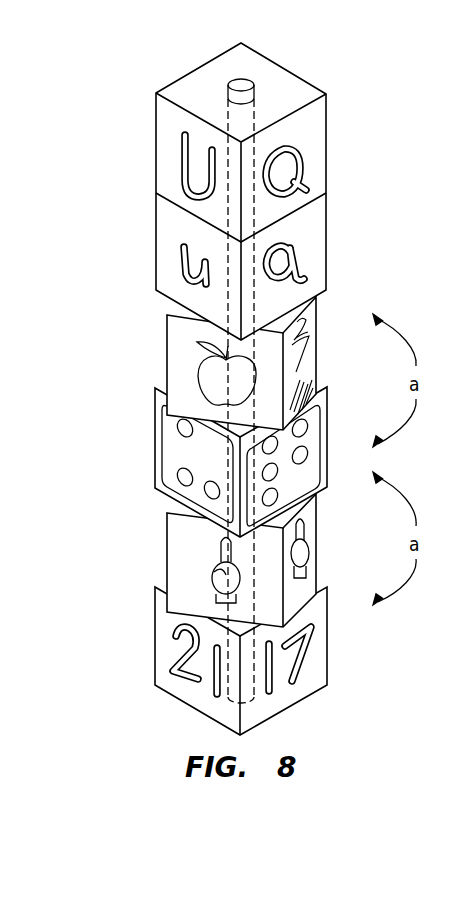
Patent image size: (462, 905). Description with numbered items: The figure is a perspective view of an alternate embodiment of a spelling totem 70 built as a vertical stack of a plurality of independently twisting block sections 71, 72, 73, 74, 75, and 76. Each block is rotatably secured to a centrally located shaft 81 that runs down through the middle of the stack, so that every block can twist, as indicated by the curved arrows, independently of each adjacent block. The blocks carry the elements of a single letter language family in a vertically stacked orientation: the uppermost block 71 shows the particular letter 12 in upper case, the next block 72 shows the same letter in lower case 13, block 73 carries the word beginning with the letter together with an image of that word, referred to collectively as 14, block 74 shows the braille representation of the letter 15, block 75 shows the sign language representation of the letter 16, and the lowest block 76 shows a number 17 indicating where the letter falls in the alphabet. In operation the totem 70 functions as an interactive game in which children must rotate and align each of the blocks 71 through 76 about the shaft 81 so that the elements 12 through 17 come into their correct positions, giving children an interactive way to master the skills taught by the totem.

The totem 70 is at (224, 374).
The centrally located shaft 81 is at (243, 84).
The block section 71 is at (224, 145).
The block section 72 is at (220, 241).
The block section 73 is at (216, 360).
The block section 74 is at (223, 462).
The block section 75 is at (223, 558).
The block section 76 is at (218, 661).
The particular letter 12 is at (245, 163).
The letter in lower case 13 is at (183, 252).
The word and image 14 is at (188, 355).
The braille representation of the letter 15 is at (112, 390).
The sign language representation of the letter 16 is at (247, 561).
The number 17 is at (241, 660).